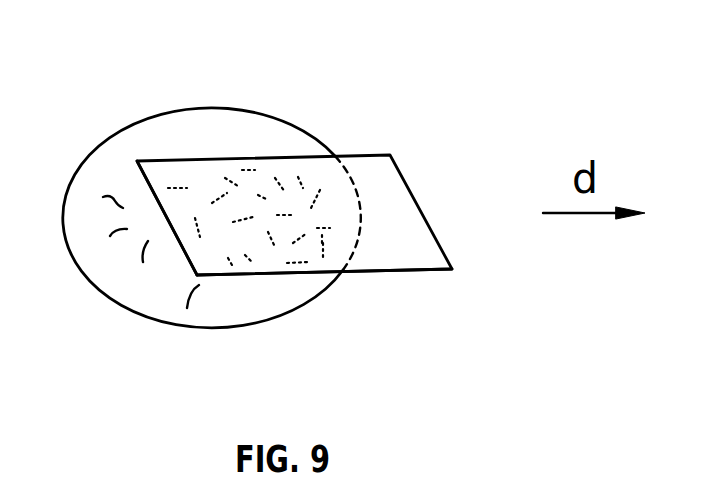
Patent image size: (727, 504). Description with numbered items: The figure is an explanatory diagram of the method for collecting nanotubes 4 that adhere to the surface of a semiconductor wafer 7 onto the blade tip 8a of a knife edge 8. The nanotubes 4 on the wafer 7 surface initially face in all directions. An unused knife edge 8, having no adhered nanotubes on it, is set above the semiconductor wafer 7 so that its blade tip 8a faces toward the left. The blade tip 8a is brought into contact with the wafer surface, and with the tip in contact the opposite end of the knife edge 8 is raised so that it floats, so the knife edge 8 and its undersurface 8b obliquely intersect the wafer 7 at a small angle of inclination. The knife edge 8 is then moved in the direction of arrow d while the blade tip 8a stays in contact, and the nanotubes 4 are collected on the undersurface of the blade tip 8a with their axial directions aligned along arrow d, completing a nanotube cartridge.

The nanotubes 4 is at (295, 272).
The semiconductor wafer 7 is at (107, 283).
The knife edge 8 is at (294, 200).
The blade tip 8a is at (173, 227).
The undersurface 8b is at (380, 273).